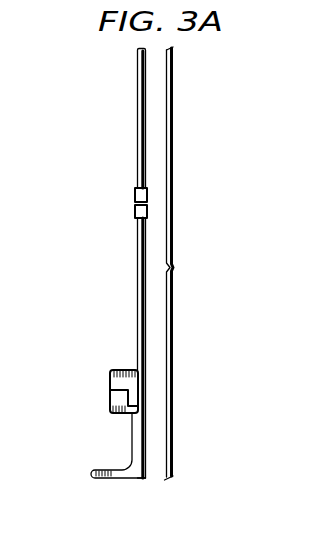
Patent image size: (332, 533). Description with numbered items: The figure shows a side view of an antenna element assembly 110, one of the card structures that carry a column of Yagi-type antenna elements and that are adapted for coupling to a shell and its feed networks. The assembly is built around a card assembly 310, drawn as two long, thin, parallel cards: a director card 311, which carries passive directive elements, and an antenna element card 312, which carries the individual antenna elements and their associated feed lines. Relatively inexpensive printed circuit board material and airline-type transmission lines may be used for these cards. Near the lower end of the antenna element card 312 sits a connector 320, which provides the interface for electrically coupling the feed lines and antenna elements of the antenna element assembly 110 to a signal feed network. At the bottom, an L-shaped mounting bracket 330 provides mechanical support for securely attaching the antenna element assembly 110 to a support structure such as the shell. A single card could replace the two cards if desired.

The antenna element assembly 110 is at (88, 208).
The card assembly 310 is at (188, 263).
The director card 311 is at (137, 126).
The antenna element card 312 is at (137, 303).
The connector 320 is at (110, 396).
The mounting bracket 330 is at (105, 480).